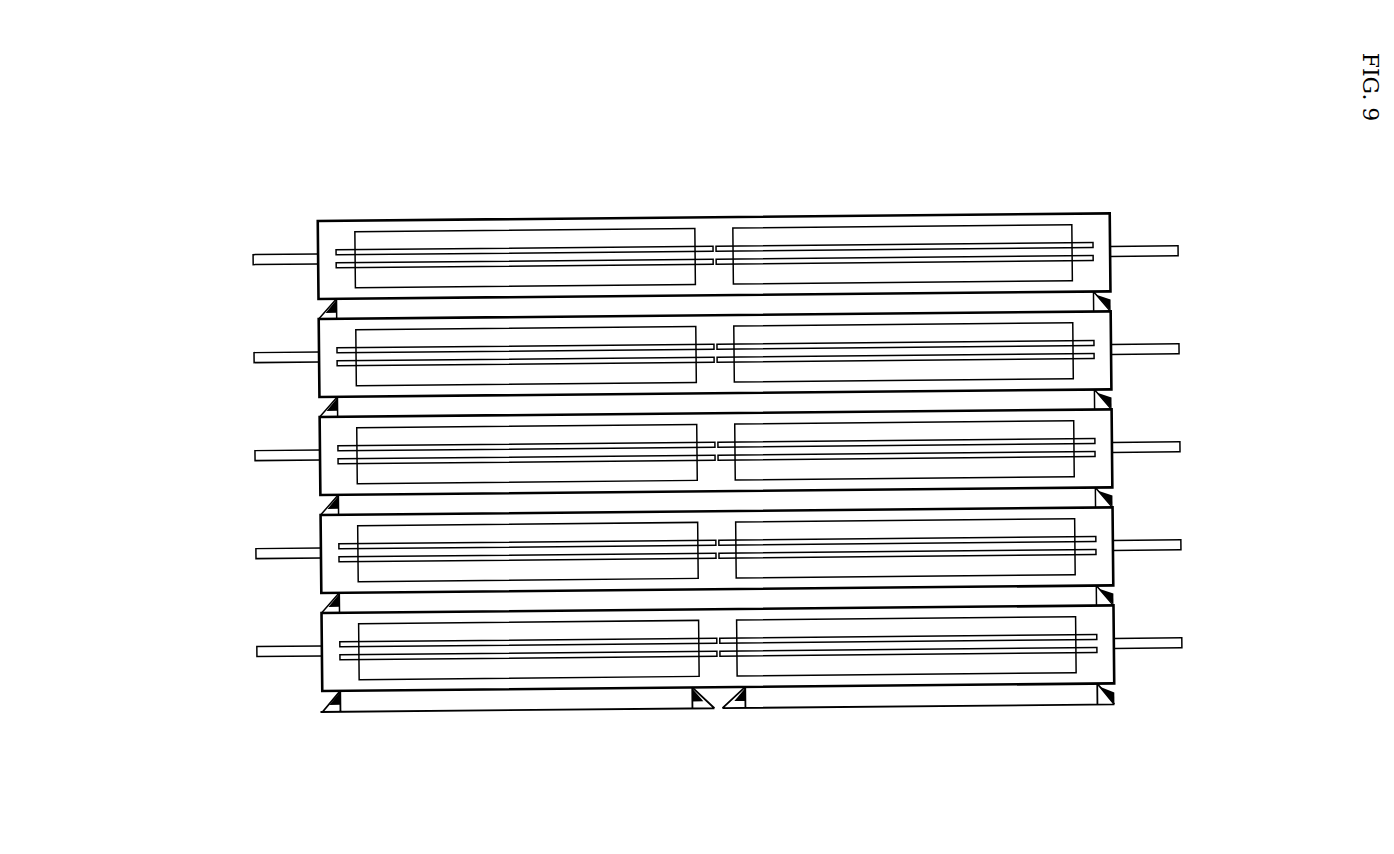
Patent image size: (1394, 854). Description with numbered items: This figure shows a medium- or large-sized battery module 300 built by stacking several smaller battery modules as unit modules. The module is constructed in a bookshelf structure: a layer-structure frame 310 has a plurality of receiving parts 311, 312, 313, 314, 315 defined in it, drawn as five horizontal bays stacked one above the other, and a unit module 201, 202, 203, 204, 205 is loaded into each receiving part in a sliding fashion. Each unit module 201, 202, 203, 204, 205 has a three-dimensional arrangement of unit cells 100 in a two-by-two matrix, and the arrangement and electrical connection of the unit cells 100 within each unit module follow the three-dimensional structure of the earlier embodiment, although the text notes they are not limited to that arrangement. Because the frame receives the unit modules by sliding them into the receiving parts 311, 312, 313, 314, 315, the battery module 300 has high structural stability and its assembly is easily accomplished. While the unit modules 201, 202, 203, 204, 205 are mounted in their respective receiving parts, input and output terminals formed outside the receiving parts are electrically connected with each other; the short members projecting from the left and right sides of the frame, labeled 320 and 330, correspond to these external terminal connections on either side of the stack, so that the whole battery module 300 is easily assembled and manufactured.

The medium- or large-sized battery module 300 is at (165, 89).
The unit cell 100 is at (519, 222).
The layer-structure frame 310 is at (723, 215).
The receiving part 311 is at (738, 218).
The receiving part 312 is at (722, 350).
The receiving part 313 is at (722, 451).
The receiving part 314 is at (722, 546).
The receiving part 315 is at (722, 647).
The unit module 201 is at (1095, 226).
The unit module 202 is at (1102, 322).
The unit module 203 is at (1102, 420).
The unit module 204 is at (1102, 520).
The unit module 205 is at (1102, 620).
The left electrode terminal 320 is at (250, 254).
The right electrode terminal 330 is at (1182, 247).